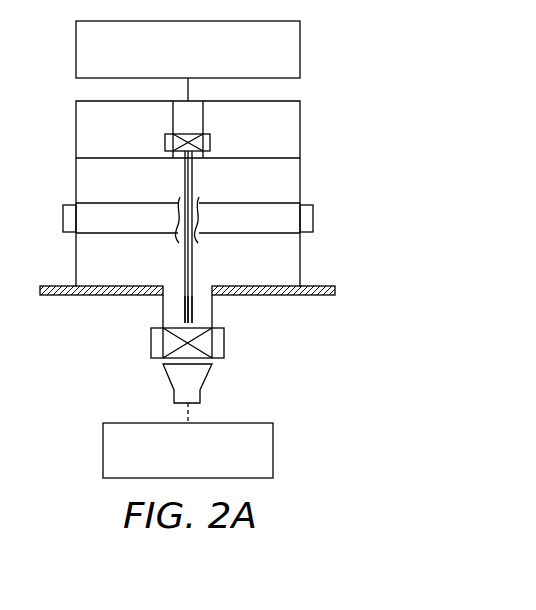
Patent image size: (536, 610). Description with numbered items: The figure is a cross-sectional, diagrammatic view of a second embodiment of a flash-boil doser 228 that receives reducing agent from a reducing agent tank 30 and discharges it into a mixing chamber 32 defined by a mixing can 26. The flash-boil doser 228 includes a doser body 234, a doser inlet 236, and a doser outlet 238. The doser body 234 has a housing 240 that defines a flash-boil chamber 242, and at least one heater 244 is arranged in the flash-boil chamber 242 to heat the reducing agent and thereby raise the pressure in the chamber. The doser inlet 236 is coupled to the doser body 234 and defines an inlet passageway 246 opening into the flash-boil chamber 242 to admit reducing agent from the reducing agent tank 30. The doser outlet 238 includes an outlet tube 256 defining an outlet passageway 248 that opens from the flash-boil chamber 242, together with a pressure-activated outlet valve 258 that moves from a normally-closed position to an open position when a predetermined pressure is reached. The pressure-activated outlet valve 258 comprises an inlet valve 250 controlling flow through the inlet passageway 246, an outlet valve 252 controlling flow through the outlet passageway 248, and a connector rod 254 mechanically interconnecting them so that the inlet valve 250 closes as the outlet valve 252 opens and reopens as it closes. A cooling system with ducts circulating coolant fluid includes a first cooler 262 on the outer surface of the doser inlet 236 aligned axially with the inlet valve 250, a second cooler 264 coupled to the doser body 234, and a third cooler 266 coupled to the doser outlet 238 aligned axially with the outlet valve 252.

The mixing can 26 is at (335, 291).
The reducing agent tank 30 is at (300, 50).
The mixing chamber 32 is at (103, 452).
The flash-boil doser 228 is at (231, 188).
The doser body 234 is at (303, 137).
The doser inlet 236 is at (209, 121).
The doser outlet 238 is at (237, 349).
The housing 240 is at (300, 148).
The flash-boil chamber 242 is at (274, 183).
The heater 244 is at (300, 203).
The inlet passageway 246 is at (190, 111).
The outlet passageway 248 is at (198, 315).
The inlet valve 250 is at (185, 138).
The outlet valve 252 is at (215, 352).
The connector rod 254 is at (205, 178).
The outlet tube 256 is at (213, 322).
The pressure-activated outlet valve 258 is at (208, 263).
The first cooler 262 is at (160, 140).
The second cooler 264 is at (71, 236).
The third cooler 266 is at (150, 341).